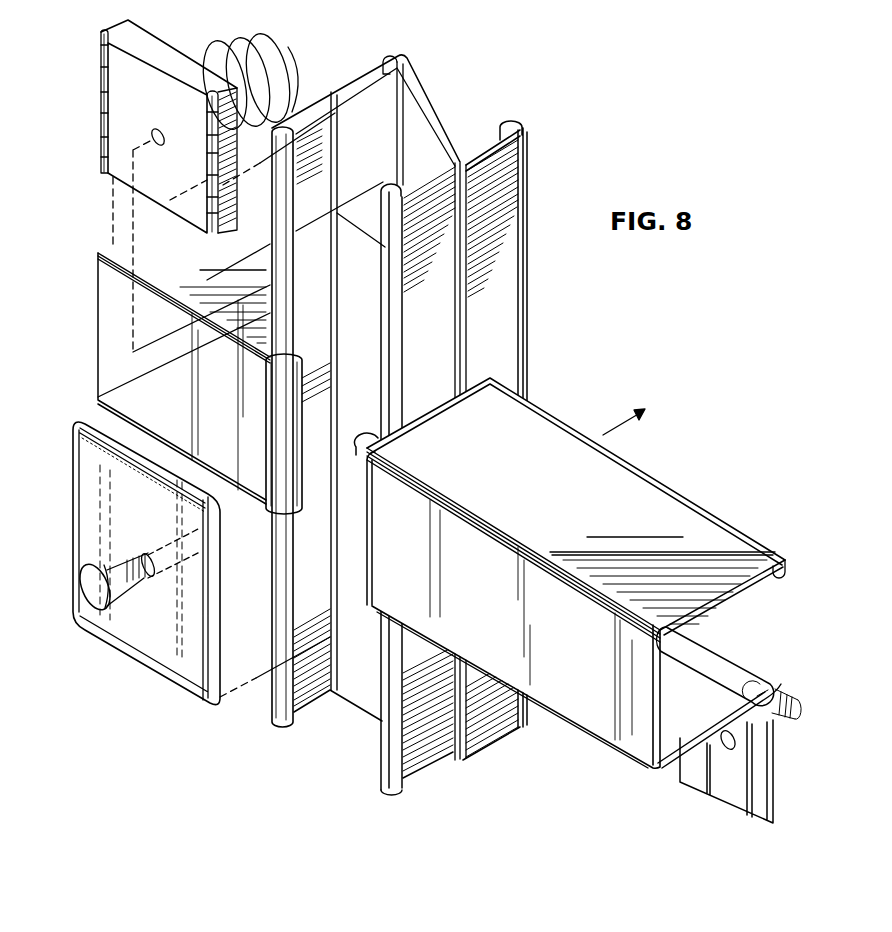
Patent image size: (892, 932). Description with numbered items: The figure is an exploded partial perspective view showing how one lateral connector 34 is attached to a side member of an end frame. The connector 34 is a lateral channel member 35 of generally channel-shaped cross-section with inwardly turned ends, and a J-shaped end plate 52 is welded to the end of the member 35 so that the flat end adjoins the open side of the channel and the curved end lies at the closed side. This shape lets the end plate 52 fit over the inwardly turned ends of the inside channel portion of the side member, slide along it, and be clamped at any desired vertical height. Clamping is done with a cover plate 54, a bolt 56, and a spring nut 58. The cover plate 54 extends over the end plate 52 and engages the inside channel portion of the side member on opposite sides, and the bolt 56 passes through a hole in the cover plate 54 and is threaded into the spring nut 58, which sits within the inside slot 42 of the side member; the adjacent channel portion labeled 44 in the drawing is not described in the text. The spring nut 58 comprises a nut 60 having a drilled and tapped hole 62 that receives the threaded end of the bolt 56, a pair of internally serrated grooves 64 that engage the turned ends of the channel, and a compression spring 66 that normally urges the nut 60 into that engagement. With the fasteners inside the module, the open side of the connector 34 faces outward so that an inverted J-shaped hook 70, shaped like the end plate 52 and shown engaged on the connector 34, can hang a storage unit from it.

The lateral connector 34 is at (422, 511).
The lateral channel member 35 is at (108, 362).
The inside slot 42 is at (343, 134).
The column 44 is at (437, 126).
The J-shaped end plate 52 is at (276, 418).
The cover plate 54 is at (195, 563).
The bolt 56 is at (97, 595).
The spring nut 58 is at (165, 185).
The nut 60 is at (125, 173).
The drilled and tapped hole 62 is at (154, 134).
The internally serrated grooves 64 is at (110, 78).
The compression spring 66 is at (292, 49).
The inverted J-shaped hook 70 is at (730, 787).